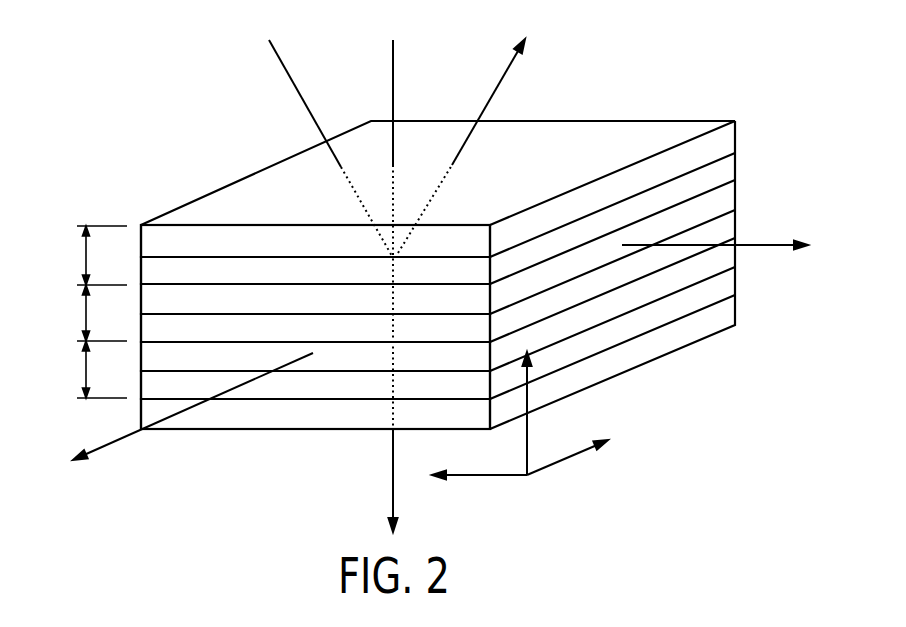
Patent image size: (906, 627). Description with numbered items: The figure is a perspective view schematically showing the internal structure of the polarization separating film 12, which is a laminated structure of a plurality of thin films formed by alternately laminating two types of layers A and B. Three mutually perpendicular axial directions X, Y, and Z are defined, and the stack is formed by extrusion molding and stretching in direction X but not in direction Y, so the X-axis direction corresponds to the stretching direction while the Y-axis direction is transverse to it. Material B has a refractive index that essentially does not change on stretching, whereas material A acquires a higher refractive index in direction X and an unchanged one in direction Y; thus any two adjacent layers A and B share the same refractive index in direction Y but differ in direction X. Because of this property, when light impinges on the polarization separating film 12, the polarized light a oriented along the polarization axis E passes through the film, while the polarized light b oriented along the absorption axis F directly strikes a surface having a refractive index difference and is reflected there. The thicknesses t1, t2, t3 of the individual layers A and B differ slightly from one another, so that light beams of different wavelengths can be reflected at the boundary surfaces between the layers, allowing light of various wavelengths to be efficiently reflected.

The polarization separating film 12 is at (595, 142).
The layer A is at (315, 327).
The layer B is at (315, 328).
The polarized light a is at (395, 270).
The polarized light b is at (389, 132).
The polarization axis E is at (727, 247).
The absorption axis F is at (178, 415).
The X-axis direction X is at (569, 464).
The Y-axis direction Y is at (479, 495).
The Z-axis direction Z is at (536, 413).
The thickness t1 is at (89, 255).
The thickness t2 is at (89, 313).
The thickness t3 is at (89, 369).